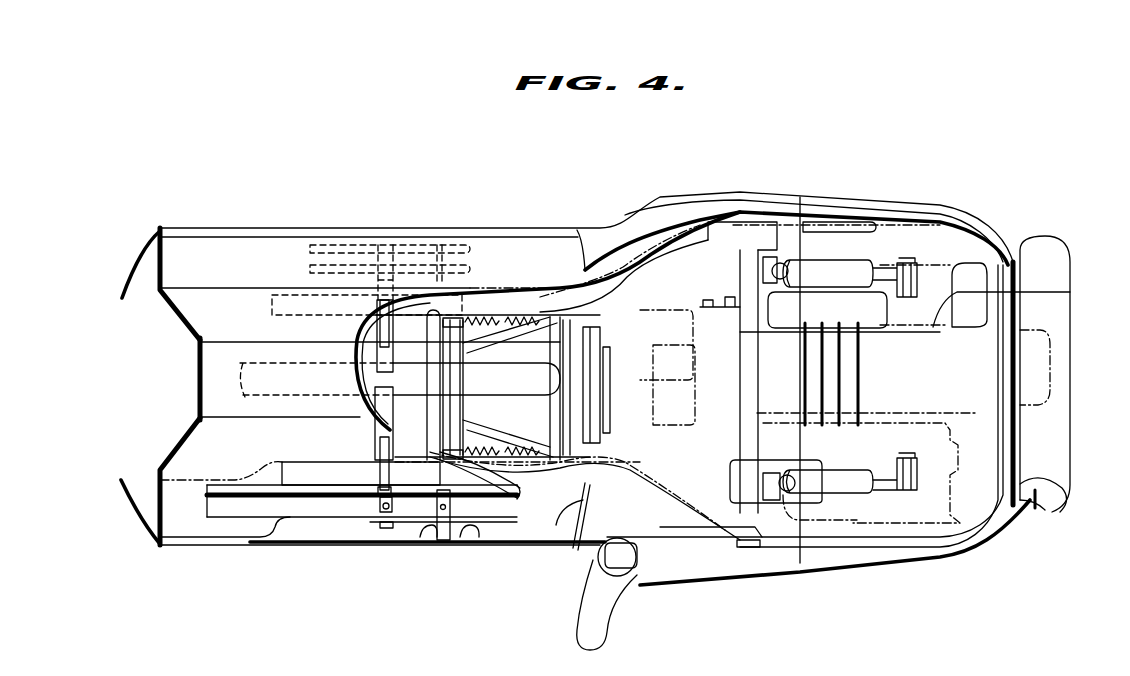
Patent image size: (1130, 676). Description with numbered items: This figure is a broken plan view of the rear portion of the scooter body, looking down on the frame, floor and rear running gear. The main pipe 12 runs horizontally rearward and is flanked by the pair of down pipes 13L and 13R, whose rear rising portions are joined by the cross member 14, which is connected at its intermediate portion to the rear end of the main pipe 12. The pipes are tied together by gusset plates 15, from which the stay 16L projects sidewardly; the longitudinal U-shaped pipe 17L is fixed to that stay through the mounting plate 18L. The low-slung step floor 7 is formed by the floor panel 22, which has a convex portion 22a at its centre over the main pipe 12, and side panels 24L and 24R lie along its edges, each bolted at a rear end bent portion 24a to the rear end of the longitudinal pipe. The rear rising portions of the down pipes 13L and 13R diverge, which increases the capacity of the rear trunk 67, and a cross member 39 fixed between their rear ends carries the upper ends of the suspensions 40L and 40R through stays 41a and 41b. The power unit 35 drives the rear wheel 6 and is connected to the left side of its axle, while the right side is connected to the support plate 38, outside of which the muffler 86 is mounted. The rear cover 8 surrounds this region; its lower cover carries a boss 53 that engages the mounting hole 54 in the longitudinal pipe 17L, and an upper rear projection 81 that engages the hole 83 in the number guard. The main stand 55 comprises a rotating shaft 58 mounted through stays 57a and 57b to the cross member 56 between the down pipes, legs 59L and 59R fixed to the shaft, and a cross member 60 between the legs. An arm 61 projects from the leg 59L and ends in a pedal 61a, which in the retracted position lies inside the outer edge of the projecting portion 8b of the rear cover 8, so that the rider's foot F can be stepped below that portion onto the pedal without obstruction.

The rear wheel 6 is at (1050, 355).
The low-slung step floor 7 is at (254, 226).
The rear cover 8 is at (993, 541).
The projecting portion of the rear cover 8b is at (645, 572).
The main pipe 12 is at (238, 364).
The right down pipe 13R is at (278, 312).
The left down pipe 13L is at (357, 484).
The cross member 14 is at (538, 357).
The gusset plates 15 is at (375, 340).
The left stay 16L is at (377, 458).
The left longitudinal U-shaped pipe 17L is at (290, 523).
The left mounting plate 18L is at (388, 540).
The floor panel 22 is at (152, 460).
The convex portion 22a is at (200, 380).
The right side panel 24R is at (152, 229).
The left side panel 24L is at (137, 533).
The rear end bent portion 24a is at (442, 543).
The power unit 35 is at (953, 550).
The support plate 38 is at (1068, 291).
The cross member 39 is at (740, 448).
The right suspension 40R is at (836, 262).
The left suspension 40L is at (847, 495).
The stay 41a is at (777, 502).
The stay 41b is at (768, 257).
The boss 53 is at (466, 543).
The mounting hole 54 is at (486, 543).
The main stand 55 is at (528, 305).
The cross member 56 is at (430, 352).
The stay 57a is at (517, 498).
The stay 57b is at (458, 292).
The rotating shaft 58 is at (433, 423).
The right leg 59R is at (477, 340).
The left leg 59L is at (508, 438).
The cross member 60 is at (560, 418).
The arm 61 is at (557, 520).
The pedal 61a is at (625, 577).
The rear trunk 67 is at (897, 558).
The upper rear projection 81 is at (1047, 480).
The hole 83 is at (1040, 503).
The muffler 86 is at (950, 268).
The foot F is at (588, 608).